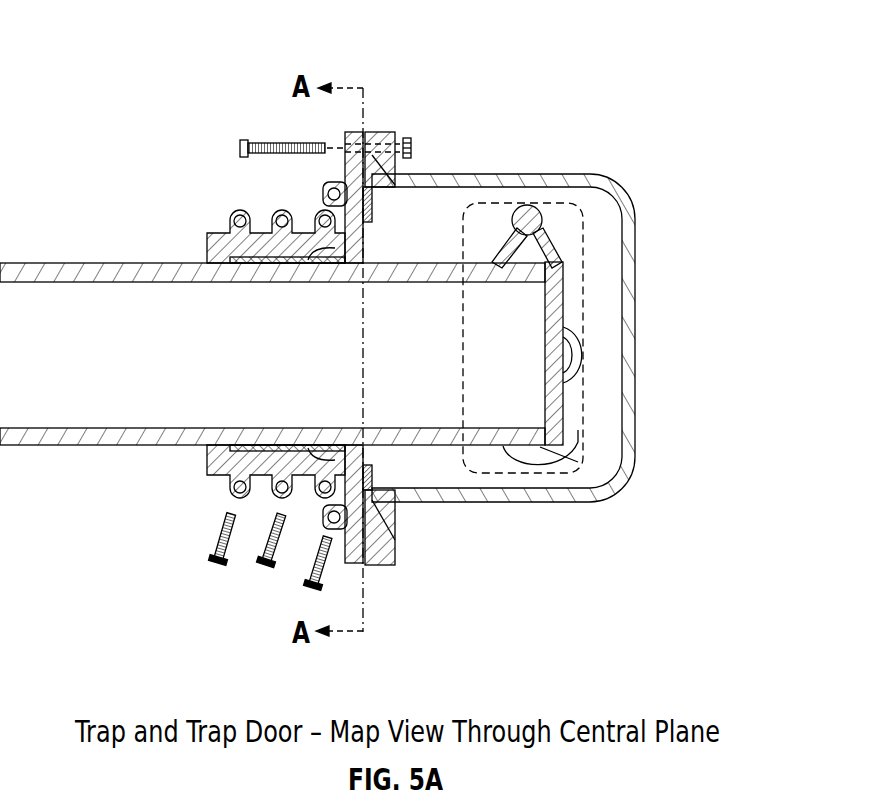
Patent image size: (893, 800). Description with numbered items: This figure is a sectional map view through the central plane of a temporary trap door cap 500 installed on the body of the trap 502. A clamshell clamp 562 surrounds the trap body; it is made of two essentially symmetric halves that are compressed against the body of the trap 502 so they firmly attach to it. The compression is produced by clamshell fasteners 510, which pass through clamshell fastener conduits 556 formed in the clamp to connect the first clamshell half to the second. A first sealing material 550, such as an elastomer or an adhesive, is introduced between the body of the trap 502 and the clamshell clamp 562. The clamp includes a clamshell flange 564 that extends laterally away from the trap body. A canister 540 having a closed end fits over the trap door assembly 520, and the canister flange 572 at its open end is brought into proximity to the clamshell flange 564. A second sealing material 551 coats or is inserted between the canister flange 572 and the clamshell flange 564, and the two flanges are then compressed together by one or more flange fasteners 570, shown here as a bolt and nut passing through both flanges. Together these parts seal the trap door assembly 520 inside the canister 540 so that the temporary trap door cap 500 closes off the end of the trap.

The temporary trap door cap 500 is at (600, 120).
The body of the trap 502 is at (131, 284).
The clamshell fasteners 510 is at (315, 548).
The trap door assembly 520 is at (538, 473).
The canister 540 is at (637, 350).
The first sealing material 550 is at (214, 262).
The second sealing material 551 is at (373, 184).
The clamshell fastener conduits 556 is at (240, 213).
The clamshell clamp 562 is at (206, 452).
The clamshell flange 564 is at (348, 570).
The flange fastener 570 is at (282, 142).
The canister flange 572 is at (396, 553).